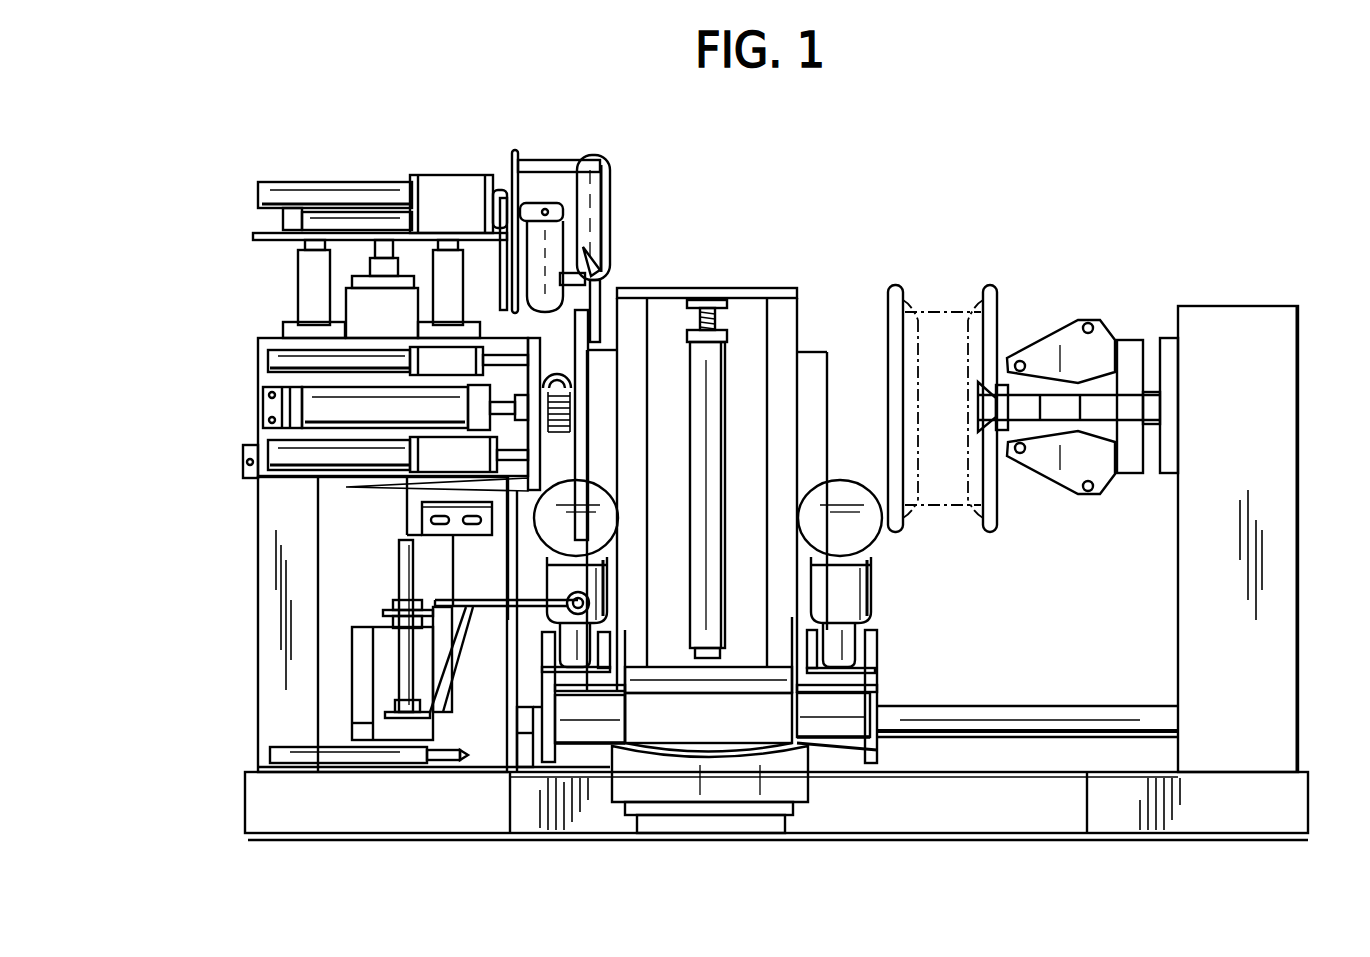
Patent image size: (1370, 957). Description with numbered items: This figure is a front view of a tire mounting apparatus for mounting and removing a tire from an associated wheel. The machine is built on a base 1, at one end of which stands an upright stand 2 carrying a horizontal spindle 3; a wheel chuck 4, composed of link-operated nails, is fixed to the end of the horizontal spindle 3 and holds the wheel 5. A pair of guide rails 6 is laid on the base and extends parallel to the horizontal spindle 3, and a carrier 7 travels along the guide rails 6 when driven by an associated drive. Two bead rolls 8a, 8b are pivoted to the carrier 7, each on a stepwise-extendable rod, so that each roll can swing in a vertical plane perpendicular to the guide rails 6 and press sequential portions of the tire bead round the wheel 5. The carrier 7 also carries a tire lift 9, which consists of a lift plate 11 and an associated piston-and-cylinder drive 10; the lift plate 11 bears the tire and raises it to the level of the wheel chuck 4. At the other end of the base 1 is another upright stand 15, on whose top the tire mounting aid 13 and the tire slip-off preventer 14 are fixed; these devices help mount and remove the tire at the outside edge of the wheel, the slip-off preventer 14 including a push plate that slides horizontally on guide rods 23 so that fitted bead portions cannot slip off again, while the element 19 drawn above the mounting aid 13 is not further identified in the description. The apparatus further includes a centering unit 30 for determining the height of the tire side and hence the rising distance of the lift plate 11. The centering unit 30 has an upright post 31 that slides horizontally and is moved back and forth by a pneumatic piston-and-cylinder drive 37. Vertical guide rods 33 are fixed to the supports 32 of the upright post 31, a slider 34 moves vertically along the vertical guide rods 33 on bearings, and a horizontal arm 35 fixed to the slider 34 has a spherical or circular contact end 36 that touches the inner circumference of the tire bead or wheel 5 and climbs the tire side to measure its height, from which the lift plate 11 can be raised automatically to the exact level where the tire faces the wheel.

The base 1 is at (1000, 828).
The upright stand 2 is at (1298, 576).
The horizontal spindle 3 is at (1162, 380).
The wheel chuck 4 is at (1064, 497).
The wheel 5 is at (1000, 315).
The guide rails 6 is at (1030, 712).
The carrier 7 is at (858, 706).
The bead roll 8a is at (603, 562).
The bead roll 8b is at (870, 572).
The tire lift 9 is at (707, 275).
The piston-and-cylinder drive 10 is at (727, 352).
The lift plate 11 is at (718, 792).
The tire mounting aid 13 is at (454, 150).
The tire slip-off preventer 14 is at (240, 388).
The upright stand 15 is at (278, 520).
The cylinder 19 is at (300, 185).
The guide rods 23 is at (282, 355).
The centering unit 30 is at (445, 682).
The upright post 31 is at (360, 692).
The supports 32 is at (388, 618).
The vertical guide rods 33 is at (405, 565).
The slider 34 is at (457, 628).
The horizontal arm 35 is at (485, 600).
The contact end 36 is at (600, 612).
The pneumatic piston-and-cylinder drive 37 is at (330, 750).